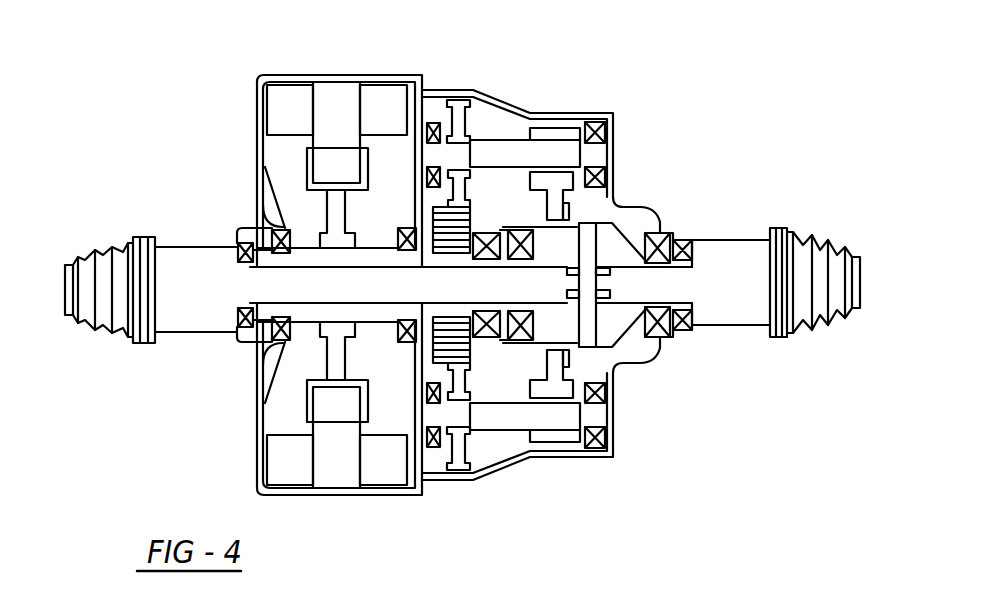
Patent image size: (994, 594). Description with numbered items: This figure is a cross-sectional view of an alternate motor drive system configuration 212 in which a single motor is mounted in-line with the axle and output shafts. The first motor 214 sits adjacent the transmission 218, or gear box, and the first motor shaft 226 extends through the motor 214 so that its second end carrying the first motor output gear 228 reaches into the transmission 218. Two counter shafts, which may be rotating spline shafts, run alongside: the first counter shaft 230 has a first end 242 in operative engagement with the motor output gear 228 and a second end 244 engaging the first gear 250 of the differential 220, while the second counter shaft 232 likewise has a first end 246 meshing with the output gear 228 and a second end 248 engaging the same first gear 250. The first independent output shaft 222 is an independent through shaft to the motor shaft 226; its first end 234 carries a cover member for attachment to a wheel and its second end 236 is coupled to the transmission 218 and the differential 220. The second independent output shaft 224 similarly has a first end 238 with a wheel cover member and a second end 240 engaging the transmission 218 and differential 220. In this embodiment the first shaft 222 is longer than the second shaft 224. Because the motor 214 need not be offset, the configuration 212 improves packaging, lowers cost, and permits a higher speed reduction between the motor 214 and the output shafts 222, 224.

The motor drive system configuration 212 is at (142, 121).
The first motor 214 is at (283, 75).
The transmission 218 is at (480, 90).
The differential 220 is at (587, 252).
The first independent output shaft 222 is at (318, 303).
The second independent output shaft 224 is at (645, 262).
The first motor shaft 226 is at (362, 262).
The first motor output gear 228 is at (476, 356).
The first counter shaft 230 is at (498, 153).
The second counter shaft 232 is at (528, 417).
The first end 234 is at (195, 280).
The second end 236 is at (622, 347).
The first end 238 is at (722, 252).
The second end 240 is at (667, 338).
The first end 242 is at (430, 132).
The second end 244 is at (580, 153).
The first end 246 is at (432, 472).
The second end 248 is at (593, 413).
The first gear 250 is at (580, 198).